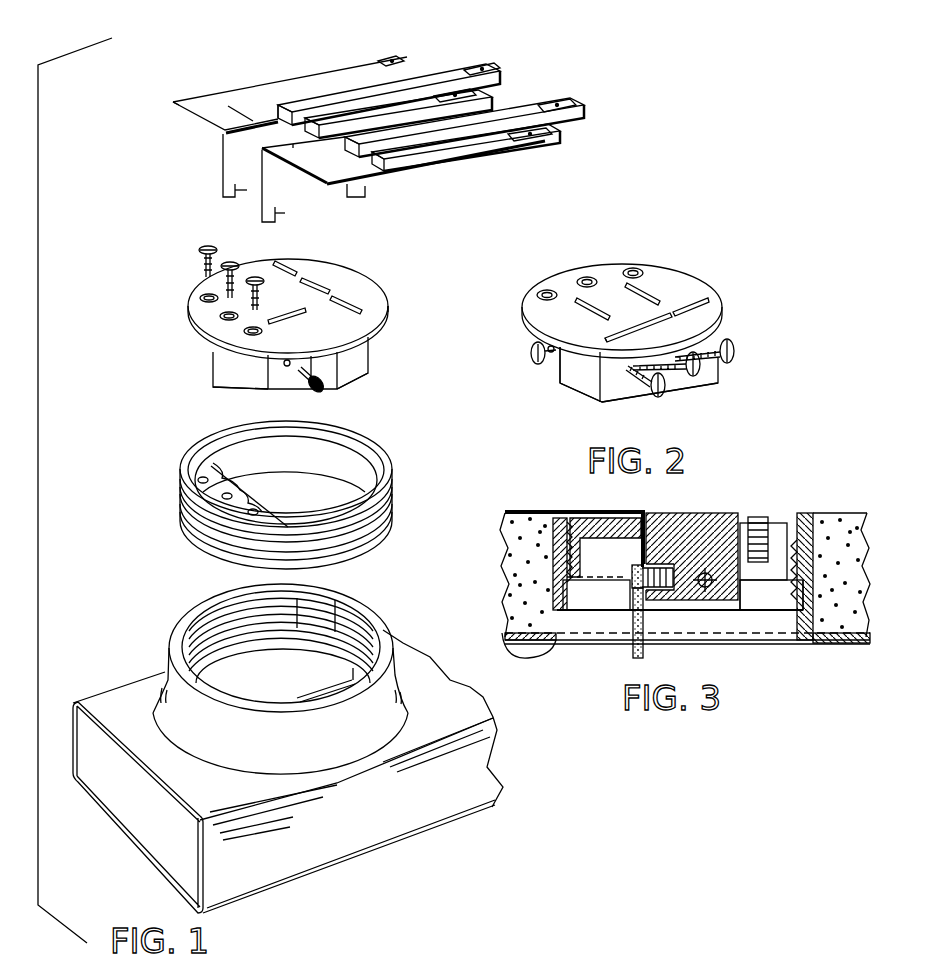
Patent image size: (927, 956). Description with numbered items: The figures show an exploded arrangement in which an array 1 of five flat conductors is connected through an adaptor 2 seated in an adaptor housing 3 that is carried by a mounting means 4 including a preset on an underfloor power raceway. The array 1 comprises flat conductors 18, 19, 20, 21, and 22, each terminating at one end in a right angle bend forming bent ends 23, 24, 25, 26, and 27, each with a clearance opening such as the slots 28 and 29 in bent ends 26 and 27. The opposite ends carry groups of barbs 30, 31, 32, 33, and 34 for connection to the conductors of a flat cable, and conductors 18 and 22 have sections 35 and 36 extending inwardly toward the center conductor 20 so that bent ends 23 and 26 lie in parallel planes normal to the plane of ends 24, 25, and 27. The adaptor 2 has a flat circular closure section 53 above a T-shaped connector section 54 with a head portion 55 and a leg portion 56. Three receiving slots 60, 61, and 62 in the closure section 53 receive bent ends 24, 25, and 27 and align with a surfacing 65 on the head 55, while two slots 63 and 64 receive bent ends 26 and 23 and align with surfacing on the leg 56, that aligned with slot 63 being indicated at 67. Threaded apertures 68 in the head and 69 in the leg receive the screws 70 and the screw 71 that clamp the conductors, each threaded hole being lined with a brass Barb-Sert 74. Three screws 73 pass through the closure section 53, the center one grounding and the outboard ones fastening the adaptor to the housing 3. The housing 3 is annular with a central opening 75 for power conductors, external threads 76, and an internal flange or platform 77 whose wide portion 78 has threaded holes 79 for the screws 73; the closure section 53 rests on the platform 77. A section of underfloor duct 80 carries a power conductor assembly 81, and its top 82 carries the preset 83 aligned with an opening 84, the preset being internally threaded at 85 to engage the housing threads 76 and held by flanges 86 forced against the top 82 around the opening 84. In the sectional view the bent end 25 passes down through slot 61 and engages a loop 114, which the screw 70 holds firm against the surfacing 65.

In FIG. 1, the array of flat conductors 1 is at (246, 54).
In FIG. 1, the adaptor 2 is at (158, 292).
In FIG. 3, the adaptor 2 is at (692, 515).
In FIG. 1, the adaptor housing 3 is at (170, 459).
In FIG. 3, the adaptor housing 3 is at (550, 558).
In FIG. 1, the mounting means 4 is at (160, 649).
In FIG. 1, the flat conductor 18 is at (310, 78).
In FIG. 1, the flat conductor 19 is at (420, 100).
In FIG. 1, the center conductor 20 is at (440, 75).
In FIG. 1, the flat conductor 21 is at (495, 117).
In FIG. 1, the flat conductor 22 is at (485, 143).
In FIG. 1, the bent end 23 is at (233, 135).
In FIG. 1, the bent end 24 is at (283, 128).
In FIG. 1, the bent end 25 is at (240, 192).
In FIG. 3, the bent end 25 is at (662, 537).
In FIG. 1, the bent end 26 is at (226, 192).
In FIG. 1, the bent end 27 is at (318, 170).
In FIG. 1, the clearance opening 28 is at (281, 210).
In FIG. 1, the clearance opening 29 is at (360, 190).
In FIG. 1, the group of barbs 30 is at (384, 61).
In FIG. 1, the group of barbs 31 is at (497, 68).
In FIG. 1, the group of barbs 32 is at (474, 97).
In FIG. 1, the group of barbs 33 is at (568, 110).
In FIG. 1, the group of barbs 34 is at (548, 136).
In FIG. 1, the inwardly extending section 35 is at (176, 106).
In FIG. 1, the inwardly extending section 36 is at (300, 160).
In FIG. 1, the closure section 53 is at (389, 312).
In FIG. 2, the closure section 53 is at (587, 265).
In FIG. 1, the connector section 54 is at (372, 347).
In FIG. 2, the connector section 54 is at (600, 400).
In FIG. 1, the head portion 55 is at (370, 373).
In FIG. 2, the head portion 55 is at (640, 395).
In FIG. 1, the leg portion 56 is at (247, 364).
In FIG. 2, the leg portion 56 is at (528, 373).
In FIG. 3, the leg portion 56 is at (750, 610).
In FIG. 1, the receiving slot 60 is at (300, 270).
In FIG. 2, the receiving slot 60 is at (708, 301).
In FIG. 1, the receiving slot 61 is at (331, 291).
In FIG. 2, the receiving slot 61 is at (675, 320).
In FIG. 3, the receiving slot 61 is at (627, 510).
In FIG. 1, the receiving slot 62 is at (362, 307).
In FIG. 2, the receiving slot 62 is at (612, 330).
In FIG. 1, the receiving slot 63 is at (245, 332).
In FIG. 2, the receiving slot 63 is at (600, 312).
In FIG. 1, the receiving slot 64 is at (282, 300).
In FIG. 2, the receiving slot 64 is at (650, 293).
In FIG. 2, the surfacing 65 is at (736, 349).
In FIG. 3, the surfacing 65 is at (635, 590).
In FIG. 1, the surfacing 67 is at (285, 367).
In FIG. 2, the surfacing 67 is at (548, 346).
In FIG. 2, the threaded aperture 68 is at (660, 397).
In FIG. 1, the threaded aperture 69 is at (294, 372).
In FIG. 2, the screw 70 is at (660, 386).
In FIG. 3, the screw 70 is at (580, 556).
In FIG. 1, the screw 71 is at (322, 388).
In FIG. 2, the screw 71 is at (531, 357).
In FIG. 1, the screw 73 is at (262, 278).
In FIG. 3, the screw 73 is at (752, 517).
In FIG. 3, the Barb-Sert 74 is at (665, 595).
In FIG. 1, the central opening 75 is at (288, 502).
In FIG. 1, the external threads 76 is at (386, 516).
In FIG. 1, the platform 77 is at (320, 445).
In FIG. 1, the wide portion of platform 78 is at (212, 495).
In FIG. 3, the wide portion of platform 78 is at (783, 540).
In FIG. 1, the threaded hole 79 is at (235, 470).
In FIG. 1, the underfloor duct 80 is at (385, 735).
In FIG. 3, the power conductor assembly 81 is at (632, 655).
In FIG. 1, the duct top 82 is at (203, 787).
In FIG. 3, the duct top 82 is at (850, 641).
In FIG. 1, the preset 83 is at (187, 723).
In FIG. 3, the preset 83 is at (813, 535).
In FIG. 1, the opening 84 is at (256, 679).
In FIG. 3, the opening 84 is at (723, 636).
In FIG. 1, the internal threads 85 is at (373, 650).
In FIG. 3, the flange 86 is at (533, 614).
In FIG. 3, the loop 114 is at (628, 605).